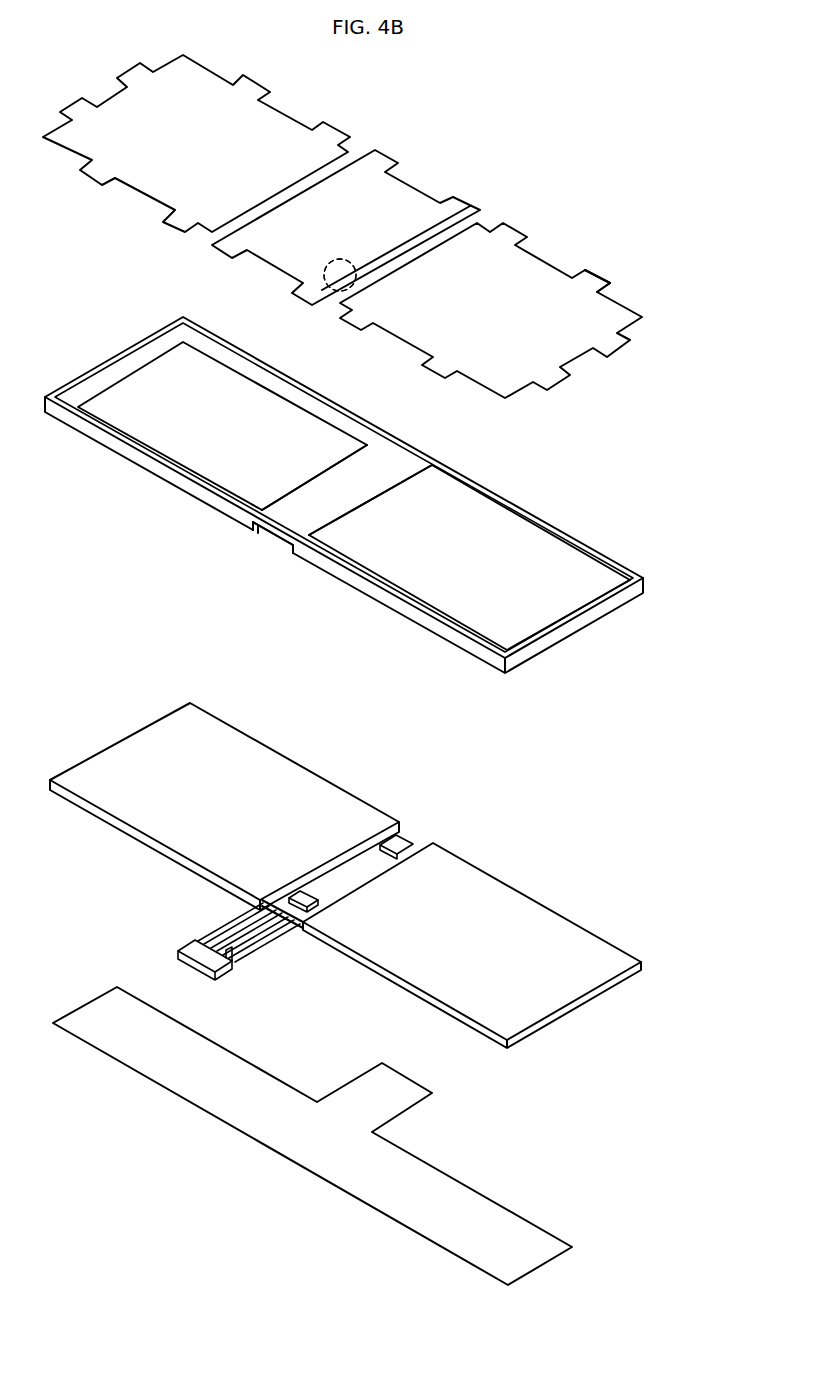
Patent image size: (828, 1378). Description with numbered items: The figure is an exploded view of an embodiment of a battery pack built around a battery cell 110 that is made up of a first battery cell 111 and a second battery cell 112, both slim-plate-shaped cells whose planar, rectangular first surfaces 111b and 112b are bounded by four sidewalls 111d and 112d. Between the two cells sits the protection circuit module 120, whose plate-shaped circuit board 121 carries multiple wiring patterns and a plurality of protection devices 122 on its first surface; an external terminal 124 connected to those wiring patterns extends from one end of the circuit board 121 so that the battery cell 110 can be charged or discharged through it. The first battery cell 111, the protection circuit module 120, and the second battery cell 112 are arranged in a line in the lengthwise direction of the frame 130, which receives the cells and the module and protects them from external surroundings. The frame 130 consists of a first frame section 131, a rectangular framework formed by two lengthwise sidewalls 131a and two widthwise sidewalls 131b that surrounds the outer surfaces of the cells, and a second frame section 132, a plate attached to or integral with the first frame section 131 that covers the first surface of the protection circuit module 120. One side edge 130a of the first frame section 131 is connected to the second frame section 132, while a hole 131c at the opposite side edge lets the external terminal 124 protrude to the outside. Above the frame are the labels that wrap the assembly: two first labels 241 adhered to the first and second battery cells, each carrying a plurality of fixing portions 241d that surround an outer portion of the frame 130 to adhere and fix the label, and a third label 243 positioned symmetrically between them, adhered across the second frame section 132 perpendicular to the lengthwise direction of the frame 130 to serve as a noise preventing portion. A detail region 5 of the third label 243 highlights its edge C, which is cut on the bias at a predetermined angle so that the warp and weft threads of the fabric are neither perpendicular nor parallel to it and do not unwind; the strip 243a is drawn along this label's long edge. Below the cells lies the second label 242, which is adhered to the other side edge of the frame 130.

The region indicator 5 is at (322, 291).
The edge C is at (381, 263).
The battery cell 110 is at (373, 906).
The first battery cell 111 is at (270, 767).
The first surface 111b is at (325, 790).
The sidewalls 111d is at (140, 838).
The second battery cell 112 is at (482, 882).
The first surface 112b is at (537, 905).
The sidewalls 112d is at (474, 1030).
The protection circuit module 120 is at (284, 891).
The circuit board 121 is at (338, 892).
The protection devices 122 is at (300, 907).
The external terminal 124 is at (180, 946).
The frame 130 is at (370, 487).
The one side edge 130a is at (130, 442).
The first frame section 131 is at (349, 486).
The lengthwise sidewalls 131a is at (200, 343).
The widthwise sidewalls 131b is at (578, 627).
The hole 131c is at (266, 550).
The second frame section 132 is at (352, 498).
The first label 241 is at (281, 121).
The fixing portions 241d is at (594, 272).
The second label 242 is at (503, 1212).
The third label 243 is at (407, 197).
The adhesive strip 243a is at (467, 201).